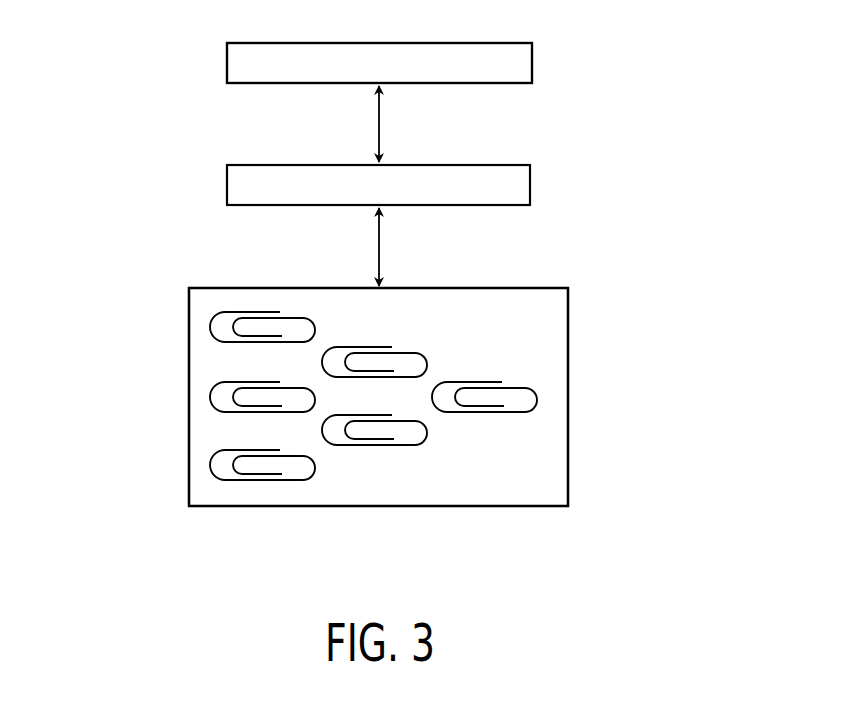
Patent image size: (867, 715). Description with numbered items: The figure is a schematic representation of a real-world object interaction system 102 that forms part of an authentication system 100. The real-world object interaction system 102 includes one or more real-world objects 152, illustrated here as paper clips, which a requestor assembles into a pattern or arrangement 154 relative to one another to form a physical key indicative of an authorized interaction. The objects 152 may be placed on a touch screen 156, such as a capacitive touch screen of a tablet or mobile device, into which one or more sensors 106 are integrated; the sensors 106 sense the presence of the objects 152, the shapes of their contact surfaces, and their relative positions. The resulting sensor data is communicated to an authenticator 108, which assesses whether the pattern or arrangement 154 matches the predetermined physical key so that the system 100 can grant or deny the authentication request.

The authentication system 100 is at (131, 44).
The real-world object interaction system 102 is at (177, 429).
The sensors 106 is at (453, 165).
The authenticator 108 is at (453, 43).
The real-world objects 152 is at (216, 313).
The pattern or arrangement 154 is at (379, 463).
The touch screen 156 is at (189, 396).